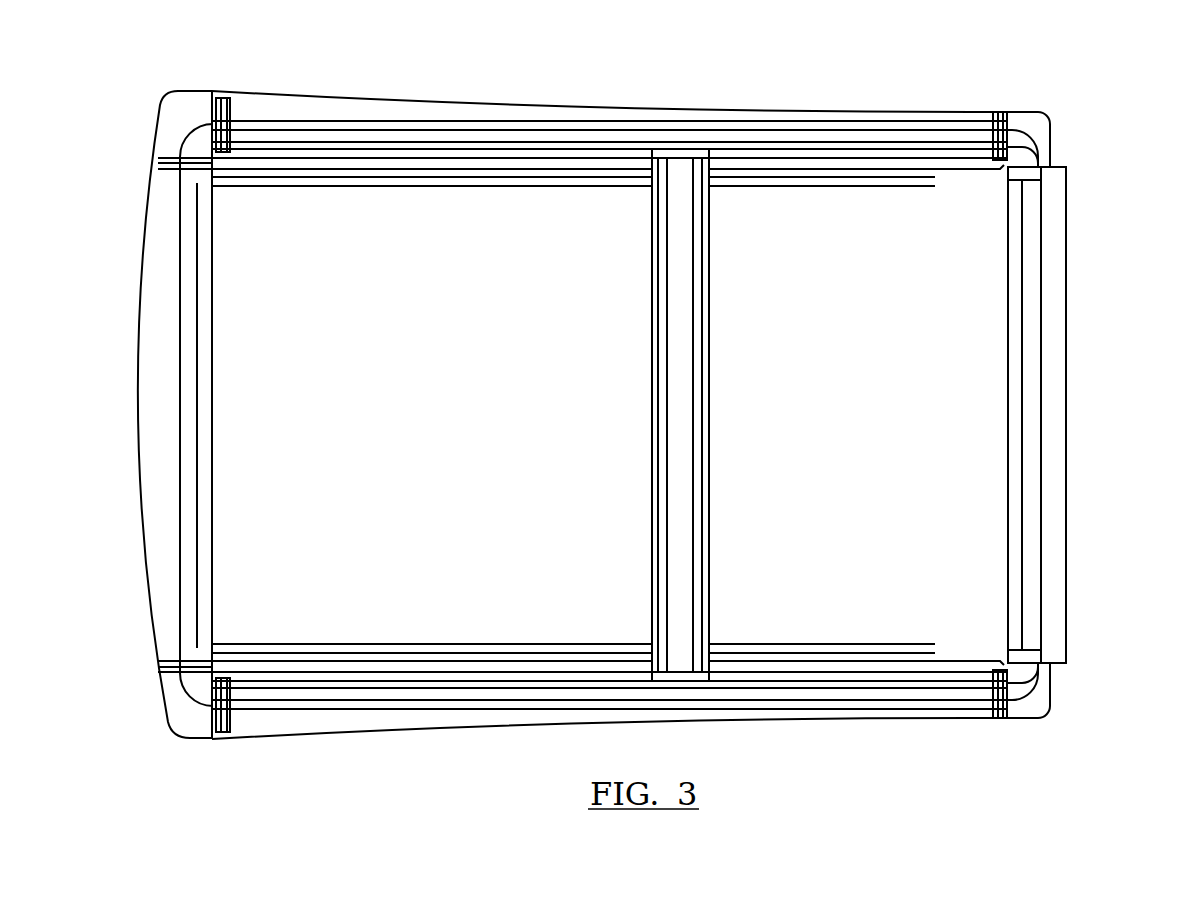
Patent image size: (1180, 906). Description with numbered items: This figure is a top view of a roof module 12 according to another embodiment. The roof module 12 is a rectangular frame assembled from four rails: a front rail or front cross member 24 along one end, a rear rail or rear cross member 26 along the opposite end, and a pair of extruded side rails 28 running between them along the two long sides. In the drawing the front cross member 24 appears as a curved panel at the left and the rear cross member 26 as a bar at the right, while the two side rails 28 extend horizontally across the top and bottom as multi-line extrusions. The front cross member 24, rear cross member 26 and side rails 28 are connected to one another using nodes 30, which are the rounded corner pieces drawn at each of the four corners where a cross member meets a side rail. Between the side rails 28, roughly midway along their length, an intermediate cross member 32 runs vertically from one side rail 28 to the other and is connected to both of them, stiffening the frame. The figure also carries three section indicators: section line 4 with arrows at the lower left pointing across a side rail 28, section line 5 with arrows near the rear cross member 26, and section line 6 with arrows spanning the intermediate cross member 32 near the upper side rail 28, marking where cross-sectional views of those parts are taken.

The roof module 12 is at (718, 72).
The front cross member 24 is at (188, 360).
The rear cross member 26 is at (1060, 400).
The side rails 28 is at (862, 138).
The nodes 30 is at (186, 108).
The intermediate cross member 32 is at (680, 575).
The section line 4- 4 is at (525, 787).
The section line 5- 5 is at (937, 548).
The section line 6- 6 is at (779, 240).